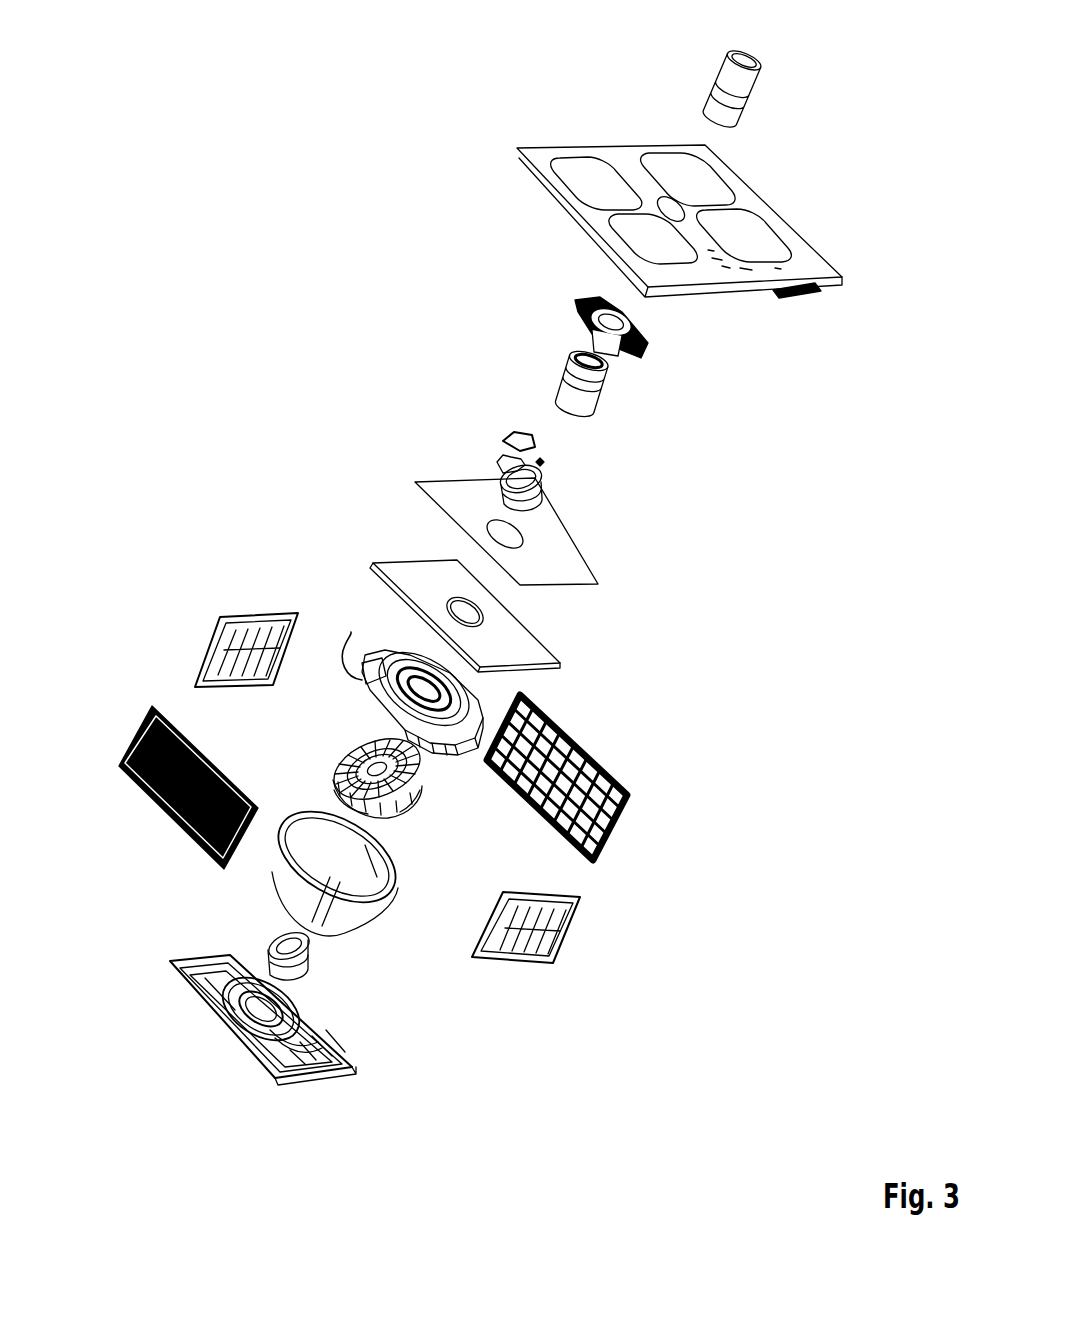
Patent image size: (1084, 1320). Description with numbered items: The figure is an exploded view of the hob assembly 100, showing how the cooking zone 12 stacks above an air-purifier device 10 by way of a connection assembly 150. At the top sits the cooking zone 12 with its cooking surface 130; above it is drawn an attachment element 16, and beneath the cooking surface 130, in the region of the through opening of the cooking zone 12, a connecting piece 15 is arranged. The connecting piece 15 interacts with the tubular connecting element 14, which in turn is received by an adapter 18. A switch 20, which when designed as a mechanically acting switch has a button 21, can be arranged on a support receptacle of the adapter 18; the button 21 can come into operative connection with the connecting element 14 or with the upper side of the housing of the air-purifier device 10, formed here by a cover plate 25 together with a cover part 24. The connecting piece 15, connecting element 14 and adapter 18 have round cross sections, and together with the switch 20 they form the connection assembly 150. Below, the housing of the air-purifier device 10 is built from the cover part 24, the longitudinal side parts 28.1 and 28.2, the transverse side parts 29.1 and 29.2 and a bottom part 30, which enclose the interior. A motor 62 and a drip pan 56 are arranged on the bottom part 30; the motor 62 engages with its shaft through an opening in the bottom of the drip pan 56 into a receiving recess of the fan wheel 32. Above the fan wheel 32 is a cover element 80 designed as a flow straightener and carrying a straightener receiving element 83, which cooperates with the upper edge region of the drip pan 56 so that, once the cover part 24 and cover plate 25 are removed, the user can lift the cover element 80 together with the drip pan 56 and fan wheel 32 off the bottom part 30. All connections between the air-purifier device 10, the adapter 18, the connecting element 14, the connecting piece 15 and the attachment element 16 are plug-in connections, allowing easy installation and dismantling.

The hob assembly 100 is at (221, 120).
The air-purifier device 10 is at (757, 962).
The connection assembly 150 is at (500, 385).
The cooking zone 12 is at (810, 196).
The cooking surface 130 is at (818, 268).
The attachment element 16 is at (767, 68).
The connecting piece 15 is at (632, 333).
The connecting element 14 is at (600, 386).
The switch 20 is at (502, 440).
The button 21 is at (546, 462).
The adapter 18 is at (548, 498).
The cover plate 25 is at (598, 584).
The cover part 24 is at (400, 605).
The straightener receiving element 83 is at (340, 639).
The cover element 80 is at (466, 687).
The fan wheel 32 is at (393, 815).
The drip pan 56 is at (270, 885).
The motor 62 is at (268, 950).
The bottom part 30 is at (213, 1017).
The transverse side part 29.1 is at (196, 677).
The longitudinal side part 28.1 is at (143, 789).
The longitudinal side part 28.2 is at (630, 798).
The transverse side part 29.2 is at (550, 963).